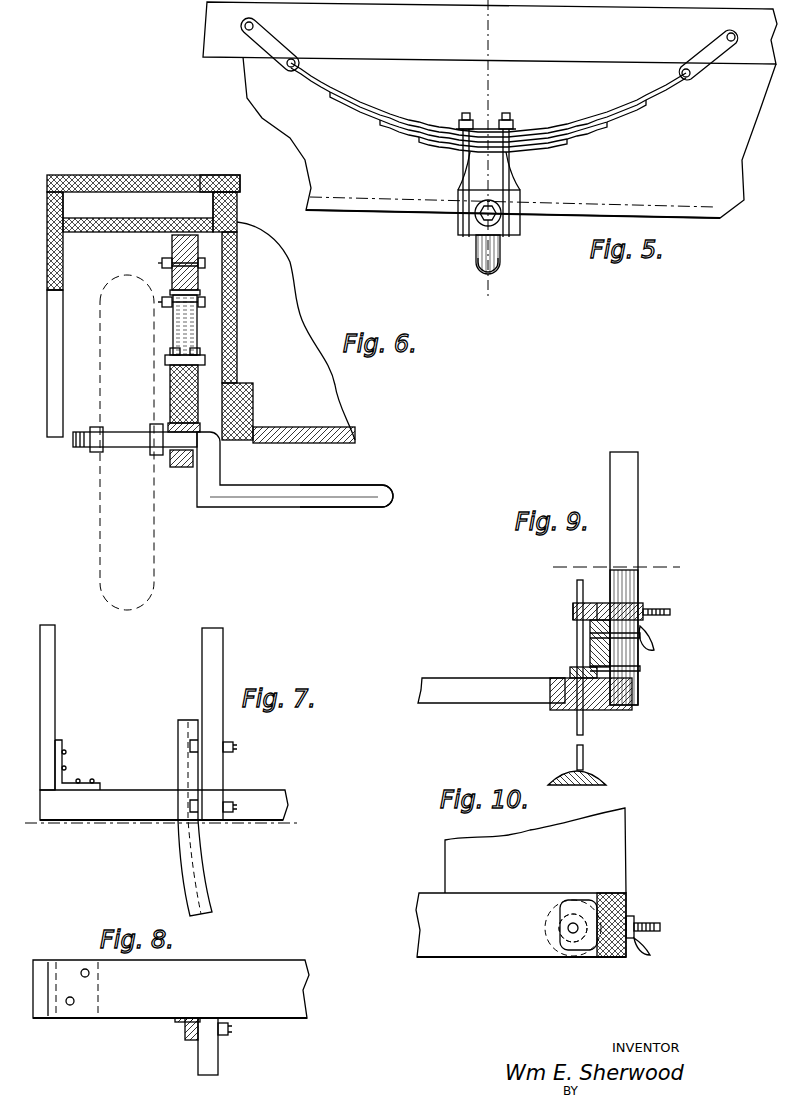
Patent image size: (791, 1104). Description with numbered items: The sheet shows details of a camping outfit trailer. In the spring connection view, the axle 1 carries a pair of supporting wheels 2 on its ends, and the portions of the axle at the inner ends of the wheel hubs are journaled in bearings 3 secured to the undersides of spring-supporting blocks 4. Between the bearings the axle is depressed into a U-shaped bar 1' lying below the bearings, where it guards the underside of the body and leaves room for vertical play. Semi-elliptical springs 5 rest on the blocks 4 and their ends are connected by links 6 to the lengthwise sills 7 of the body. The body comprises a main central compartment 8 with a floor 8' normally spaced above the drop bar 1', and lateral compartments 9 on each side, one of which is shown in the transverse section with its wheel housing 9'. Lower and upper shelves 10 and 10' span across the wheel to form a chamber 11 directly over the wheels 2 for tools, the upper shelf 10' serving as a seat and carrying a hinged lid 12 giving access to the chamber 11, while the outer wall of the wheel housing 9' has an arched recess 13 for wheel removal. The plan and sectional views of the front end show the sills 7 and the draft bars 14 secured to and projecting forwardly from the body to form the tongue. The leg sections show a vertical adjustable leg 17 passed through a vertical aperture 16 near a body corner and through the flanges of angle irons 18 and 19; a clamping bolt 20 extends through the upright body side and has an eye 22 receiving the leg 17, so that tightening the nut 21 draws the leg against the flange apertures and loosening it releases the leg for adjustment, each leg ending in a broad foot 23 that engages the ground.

In FIG. 5, the axle 1 is at (475, 251).
In FIG. 6, the axle 1 is at (233, 465).
In FIG. 5, the drop bar 1' is at (502, 267).
In FIG. 6, the drop bar 1' is at (346, 509).
In FIG. 6, the supporting wheels 2 is at (100, 554).
In FIG. 5, the bearings 3 is at (458, 223).
In FIG. 6, the bearings 3 is at (183, 468).
In FIG. 5, the spring-supporting blocks 4 is at (460, 173).
In FIG. 6, the spring-supporting blocks 4 is at (196, 404).
In FIG. 5, the semi-elliptical springs 5 is at (547, 139).
In FIG. 6, the semi-elliptical springs 5 is at (183, 362).
In FIG. 5, the links 6 is at (272, 49).
In FIG. 6, the links 6 is at (178, 278).
In FIG. 5, the sills 7 is at (490, 33).
In FIG. 6, the sills 7 is at (175, 251).
In FIG. 7, the sills 7 is at (215, 653).
In FIG. 8, the sills 7 is at (215, 1061).
In FIG. 5, the main central compartment 8 is at (509, 137).
In FIG. 6, the main central compartment 8 is at (289, 331).
In FIG. 7, the main central compartment 8 is at (160, 803).
In FIG. 9, the main central compartment 8 is at (601, 692).
In FIG. 5, the floor 8' is at (513, 226).
In FIG. 6, the floor 8' is at (318, 438).
In FIG. 9, the floor 8' is at (491, 707).
In FIG. 6, the lateral compartments 9 is at (128, 287).
In FIG. 7, the lateral compartments 9 is at (57, 707).
In FIG. 9, the lateral compartments 9 is at (633, 578).
In FIG. 6, the wheel housing 9' is at (43, 341).
In FIG. 6, the lower shelf 10 is at (138, 240).
In FIG. 9, the lower shelf 10 is at (616, 569).
In FIG. 6, the upper shelf 10' is at (143, 171).
In FIG. 6, the chamber 11 is at (72, 206).
In FIG. 6, the hinged section or lid 12 is at (200, 178).
In FIG. 6, the arched recesses 13 is at (52, 328).
In FIG. 7, the draft bars 14 is at (195, 885).
In FIG. 8, the draft bars 14 is at (183, 1023).
In FIG. 9, the vertical apertures 16 is at (595, 692).
In FIG. 9, the adjustable legs 17 is at (577, 734).
In FIG. 10, the adjustable legs 17 is at (567, 929).
In FIG. 9, the angle iron 18 is at (580, 623).
In FIG. 9, the angle iron 19 is at (575, 607).
In FIG. 10, the angle iron 19 is at (572, 949).
In FIG. 9, the clamping bolt 20 is at (630, 613).
In FIG. 10, the clamping bolt 20 is at (650, 926).
In FIG. 9, the nut 21 is at (650, 634).
In FIG. 10, the nut 21 is at (641, 945).
In FIG. 9, the eye 22 is at (574, 613).
In FIG. 10, the eye 22 is at (571, 921).
In FIG. 9, the foot 23 is at (598, 782).